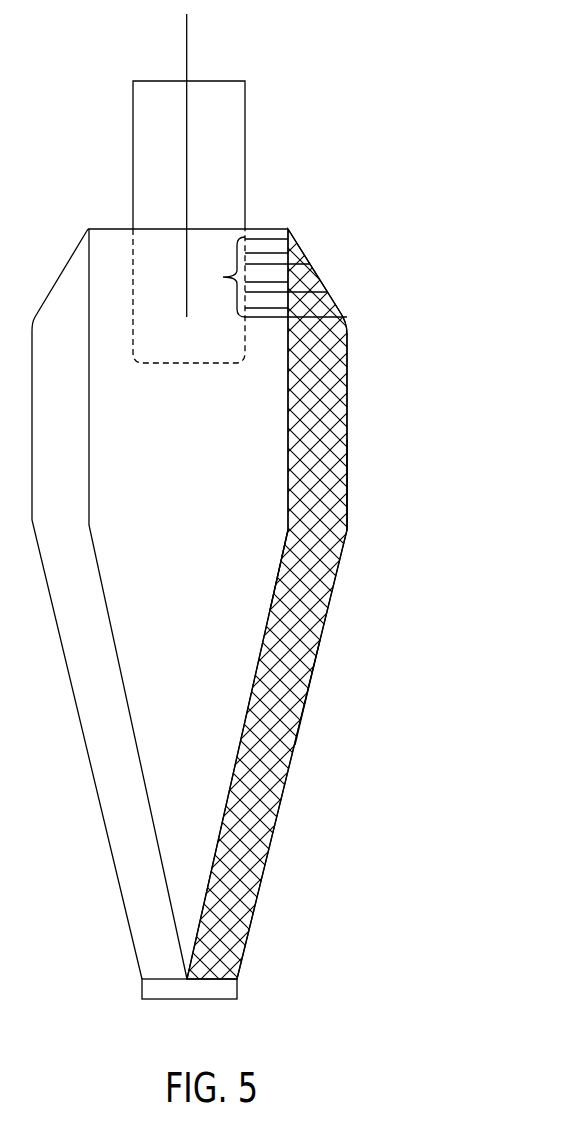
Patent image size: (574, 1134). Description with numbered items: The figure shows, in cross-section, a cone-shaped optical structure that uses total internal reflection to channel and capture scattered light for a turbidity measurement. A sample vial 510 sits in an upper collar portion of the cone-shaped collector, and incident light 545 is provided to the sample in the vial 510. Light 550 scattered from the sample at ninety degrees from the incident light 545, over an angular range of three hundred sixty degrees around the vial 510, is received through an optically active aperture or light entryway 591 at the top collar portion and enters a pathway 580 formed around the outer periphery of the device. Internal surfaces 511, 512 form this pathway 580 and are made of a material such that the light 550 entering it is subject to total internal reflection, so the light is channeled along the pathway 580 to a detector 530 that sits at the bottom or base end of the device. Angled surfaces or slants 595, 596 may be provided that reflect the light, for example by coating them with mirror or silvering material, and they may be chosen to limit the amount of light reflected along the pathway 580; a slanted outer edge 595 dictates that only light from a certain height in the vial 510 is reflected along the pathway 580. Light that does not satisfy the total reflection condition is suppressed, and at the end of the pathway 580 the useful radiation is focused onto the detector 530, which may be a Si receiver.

The sample vial 510 is at (144, 130).
The internal surface 511 is at (282, 585).
The internal surface 512 is at (343, 494).
The detector 530 is at (225, 990).
The incident light 545 is at (186, 47).
The scattered light 550 is at (258, 258).
The light pathway 580 is at (320, 449).
The light entryway 591 is at (219, 277).
The slanted outer edge 595 is at (308, 268).
The angled surface 596 is at (295, 745).